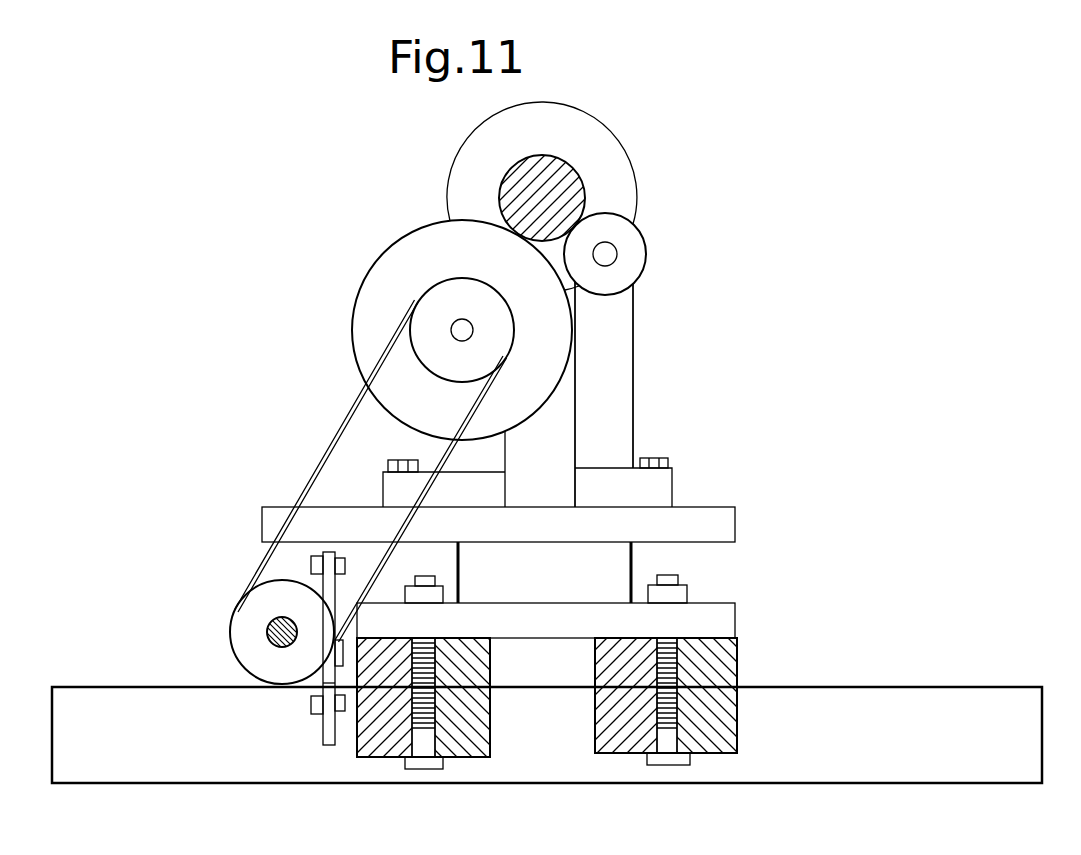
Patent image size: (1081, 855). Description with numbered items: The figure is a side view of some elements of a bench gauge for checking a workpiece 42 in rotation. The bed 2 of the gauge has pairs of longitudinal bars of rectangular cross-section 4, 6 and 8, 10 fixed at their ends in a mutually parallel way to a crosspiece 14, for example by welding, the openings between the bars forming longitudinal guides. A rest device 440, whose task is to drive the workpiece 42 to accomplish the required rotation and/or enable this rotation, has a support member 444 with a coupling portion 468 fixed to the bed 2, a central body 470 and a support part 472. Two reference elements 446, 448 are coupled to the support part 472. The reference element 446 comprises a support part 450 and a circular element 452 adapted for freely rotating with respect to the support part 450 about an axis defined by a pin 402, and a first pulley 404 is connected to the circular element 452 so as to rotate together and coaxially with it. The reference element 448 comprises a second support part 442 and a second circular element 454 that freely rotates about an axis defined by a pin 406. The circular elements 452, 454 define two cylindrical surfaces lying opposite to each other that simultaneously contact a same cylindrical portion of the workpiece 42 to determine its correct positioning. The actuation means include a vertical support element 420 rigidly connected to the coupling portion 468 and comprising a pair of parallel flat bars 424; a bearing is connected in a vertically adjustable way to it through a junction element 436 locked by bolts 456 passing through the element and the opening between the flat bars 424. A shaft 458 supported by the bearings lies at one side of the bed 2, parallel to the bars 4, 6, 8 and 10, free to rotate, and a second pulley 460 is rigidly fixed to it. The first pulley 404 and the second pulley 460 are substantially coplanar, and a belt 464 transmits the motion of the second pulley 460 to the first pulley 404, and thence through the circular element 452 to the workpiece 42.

The bed 2 is at (98, 663).
The longitudinal bar 4 is at (389, 754).
The longitudinal bar 6 is at (492, 753).
The longitudinal bar 8 is at (611, 750).
The longitudinal bar 10 is at (725, 750).
The crosspiece 14 is at (96, 759).
The workpiece 42 is at (607, 145).
The pin 402 is at (455, 327).
The first pulley 404 is at (447, 293).
The pin 406 is at (609, 250).
The vertical support element 420 is at (292, 576).
The flat bar 424 is at (336, 748).
The junction element 436 is at (320, 682).
The rest device 440 is at (326, 216).
The second support part 442 is at (625, 435).
The support member 444 is at (756, 567).
The reference element 446 is at (330, 351).
The reference element 448 is at (655, 361).
The support part 450 is at (430, 448).
The circular element 452 is at (438, 228).
The second circular element 454 is at (636, 263).
The bolts 456 is at (310, 562).
The shaft 458 is at (268, 627).
The second pulley 460 is at (248, 658).
The belt 464 is at (327, 468).
The coupling portion 468 is at (723, 622).
The central body 470 is at (626, 560).
The support part 472 is at (736, 513).